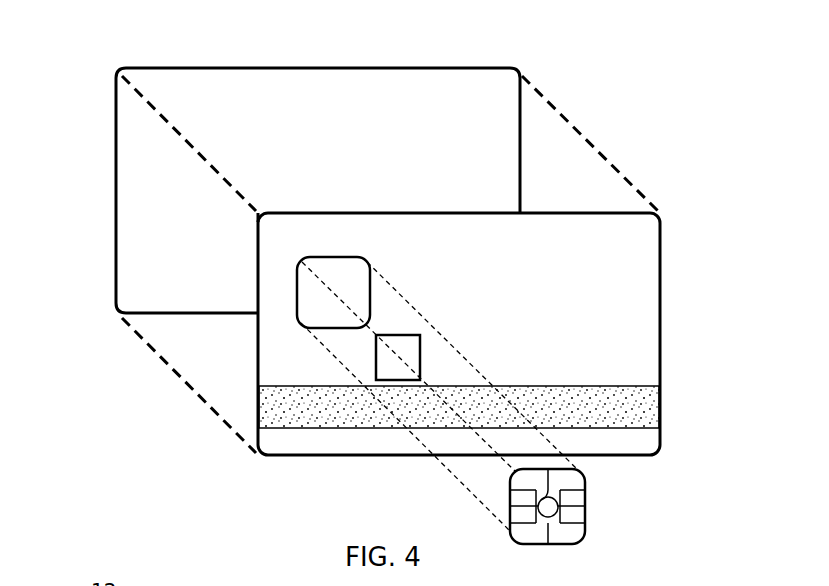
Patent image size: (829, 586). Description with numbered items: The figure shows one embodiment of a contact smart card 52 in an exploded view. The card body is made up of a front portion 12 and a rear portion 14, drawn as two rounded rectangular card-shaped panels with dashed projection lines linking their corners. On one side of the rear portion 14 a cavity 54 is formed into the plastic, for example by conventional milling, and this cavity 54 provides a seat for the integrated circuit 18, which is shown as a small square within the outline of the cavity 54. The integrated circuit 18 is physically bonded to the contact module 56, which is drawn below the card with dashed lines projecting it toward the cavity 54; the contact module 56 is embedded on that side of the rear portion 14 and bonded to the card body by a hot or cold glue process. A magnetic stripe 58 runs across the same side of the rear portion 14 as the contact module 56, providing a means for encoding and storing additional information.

The front portion 12 is at (174, 68).
The rear portion 14 is at (636, 276).
The integrated circuit 18 is at (376, 357).
The contact smart card 52 is at (566, 48).
The cavity 54 is at (296, 278).
The contact module 56 is at (590, 510).
The magnetic stripe 58 is at (636, 405).